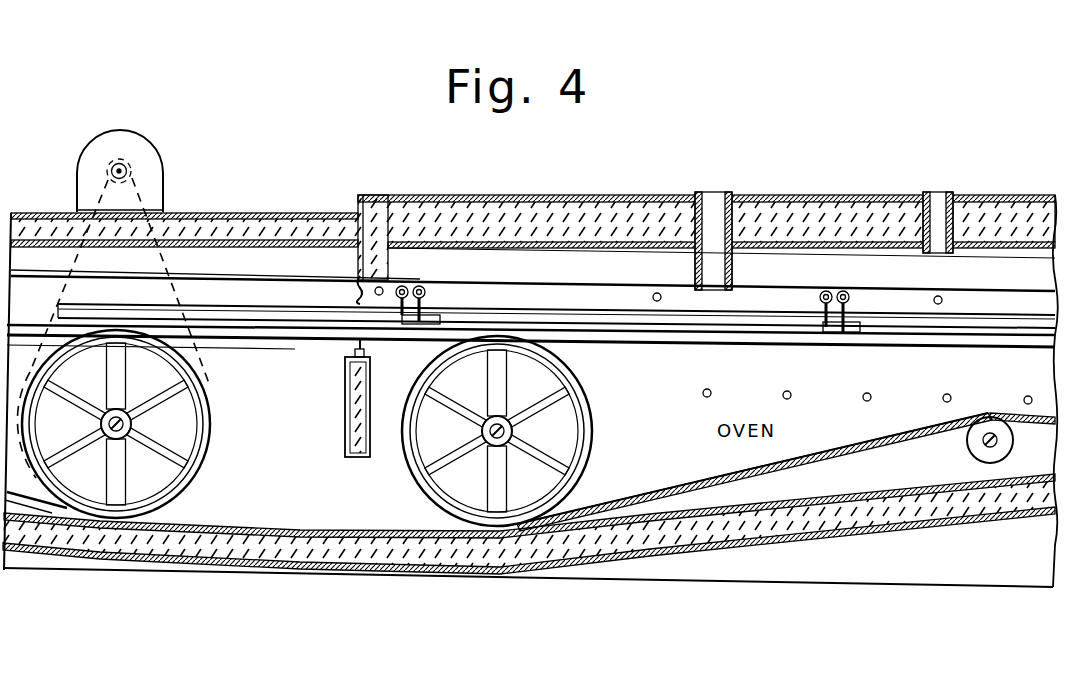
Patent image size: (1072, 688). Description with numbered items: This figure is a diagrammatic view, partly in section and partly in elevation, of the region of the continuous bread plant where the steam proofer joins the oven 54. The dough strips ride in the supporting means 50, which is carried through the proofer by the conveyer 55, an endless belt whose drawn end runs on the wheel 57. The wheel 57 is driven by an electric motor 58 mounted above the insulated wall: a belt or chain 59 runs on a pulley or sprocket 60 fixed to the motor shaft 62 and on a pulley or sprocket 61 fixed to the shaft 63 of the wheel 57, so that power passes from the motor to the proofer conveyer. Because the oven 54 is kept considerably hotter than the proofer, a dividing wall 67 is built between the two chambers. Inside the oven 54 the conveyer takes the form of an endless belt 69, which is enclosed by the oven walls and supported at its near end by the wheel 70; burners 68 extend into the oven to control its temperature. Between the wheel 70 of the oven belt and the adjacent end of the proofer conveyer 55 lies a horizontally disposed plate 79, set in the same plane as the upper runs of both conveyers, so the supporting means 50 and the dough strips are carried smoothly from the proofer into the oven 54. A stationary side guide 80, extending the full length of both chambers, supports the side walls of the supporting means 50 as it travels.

The supporting means 50 is at (28, 312).
The oven 54 is at (721, 265).
The conveyer 55 is at (74, 412).
The wheel 57 is at (203, 418).
The electric motor 58 is at (150, 167).
The belt or chain 59 is at (163, 257).
The pulley or sprocket 60 is at (118, 160).
The pulley or sprocket 61 is at (21, 417).
The motor shaft 62 is at (110, 171).
The shaft 63 is at (936, 298).
The dividing wall 67 is at (345, 417).
The burners 68 is at (703, 393).
The endless belt 69 is at (830, 342).
The wheel 70 is at (592, 440).
The plate 79 is at (295, 338).
The side guide 80 is at (735, 337).